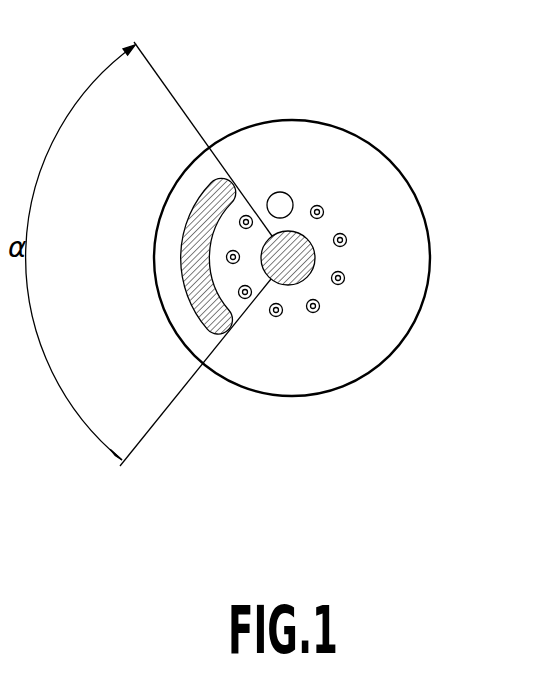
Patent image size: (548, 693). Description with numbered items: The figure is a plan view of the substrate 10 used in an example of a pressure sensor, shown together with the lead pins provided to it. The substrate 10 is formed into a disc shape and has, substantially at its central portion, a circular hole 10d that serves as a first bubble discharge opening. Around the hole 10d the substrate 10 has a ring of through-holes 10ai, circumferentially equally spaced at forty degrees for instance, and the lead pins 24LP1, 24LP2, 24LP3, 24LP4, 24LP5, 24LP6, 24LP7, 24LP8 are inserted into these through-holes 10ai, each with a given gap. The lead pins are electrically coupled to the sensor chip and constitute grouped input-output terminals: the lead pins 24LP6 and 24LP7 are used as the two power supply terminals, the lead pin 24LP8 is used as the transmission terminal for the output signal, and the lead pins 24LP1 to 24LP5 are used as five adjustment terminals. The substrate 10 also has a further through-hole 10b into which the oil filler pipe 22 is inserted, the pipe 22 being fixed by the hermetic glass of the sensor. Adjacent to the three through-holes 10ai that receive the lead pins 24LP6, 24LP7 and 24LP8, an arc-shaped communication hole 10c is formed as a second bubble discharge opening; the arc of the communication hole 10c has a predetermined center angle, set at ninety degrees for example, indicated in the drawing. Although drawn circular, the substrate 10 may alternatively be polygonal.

The substrate 10 is at (290, 136).
The through-holes 10ai is at (345, 188).
The through-hole 10b is at (270, 196).
The arc-shaped communication hole 10c is at (192, 230).
The circular hole 10d is at (316, 245).
The oil filler pipe 22 is at (285, 196).
The lead pin 24LP1 is at (319, 205).
The lead pin 24LP2 is at (346, 235).
The lead pin 24LP3 is at (345, 276).
The lead pin 24LP4 is at (320, 310).
The lead pin 24LP5 is at (277, 317).
The lead pin 24LP6 is at (238, 292).
The lead pin 24LP7 is at (226, 258).
The lead pin 24LP8 is at (239, 220).